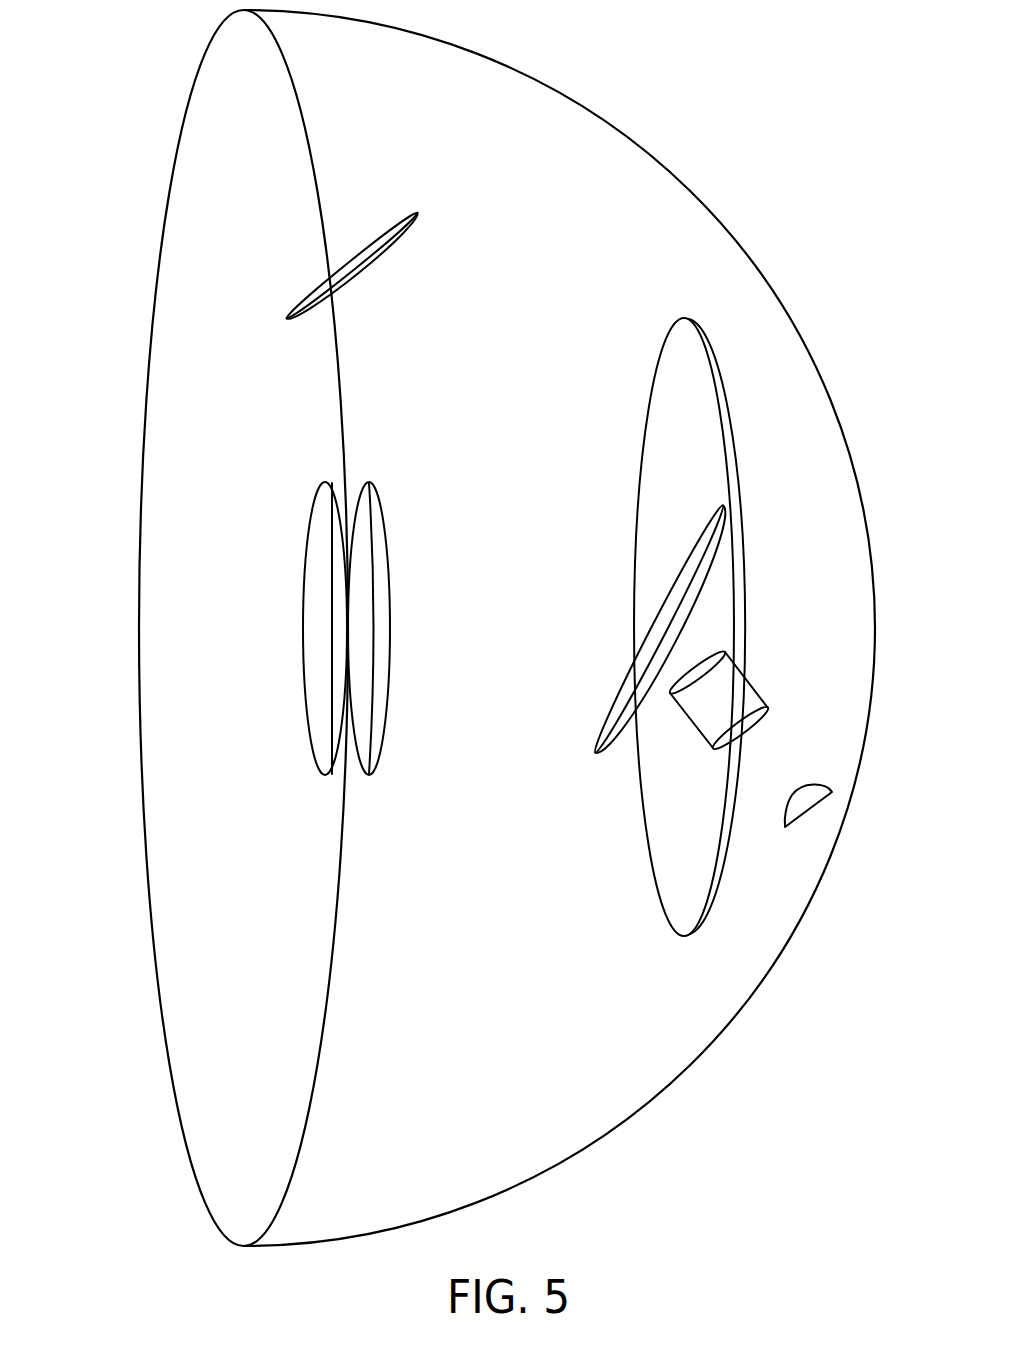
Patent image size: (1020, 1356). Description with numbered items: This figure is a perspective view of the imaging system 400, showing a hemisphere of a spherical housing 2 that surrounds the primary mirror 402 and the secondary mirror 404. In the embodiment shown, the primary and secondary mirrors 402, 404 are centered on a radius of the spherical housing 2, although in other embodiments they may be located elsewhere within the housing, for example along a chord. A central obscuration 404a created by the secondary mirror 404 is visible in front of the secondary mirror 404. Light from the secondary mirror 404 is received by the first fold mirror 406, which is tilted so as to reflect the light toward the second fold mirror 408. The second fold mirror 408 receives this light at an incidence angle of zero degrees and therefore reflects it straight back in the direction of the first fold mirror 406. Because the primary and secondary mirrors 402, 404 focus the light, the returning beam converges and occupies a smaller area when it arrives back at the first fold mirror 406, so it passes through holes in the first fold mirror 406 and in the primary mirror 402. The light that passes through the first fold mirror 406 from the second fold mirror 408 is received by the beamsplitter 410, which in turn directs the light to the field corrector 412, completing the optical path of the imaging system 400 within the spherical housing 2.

The spherical housing 2 is at (620, 130).
The optical assembly 400 is at (103, 223).
The primary mirror 402 is at (657, 362).
The secondary mirror 404 is at (372, 770).
The central obscuration 404a is at (310, 742).
The first fold mirror 406 is at (600, 700).
The second fold mirror 408 is at (414, 212).
The beamsplitter 410 is at (751, 685).
The field corrector 412 is at (810, 788).